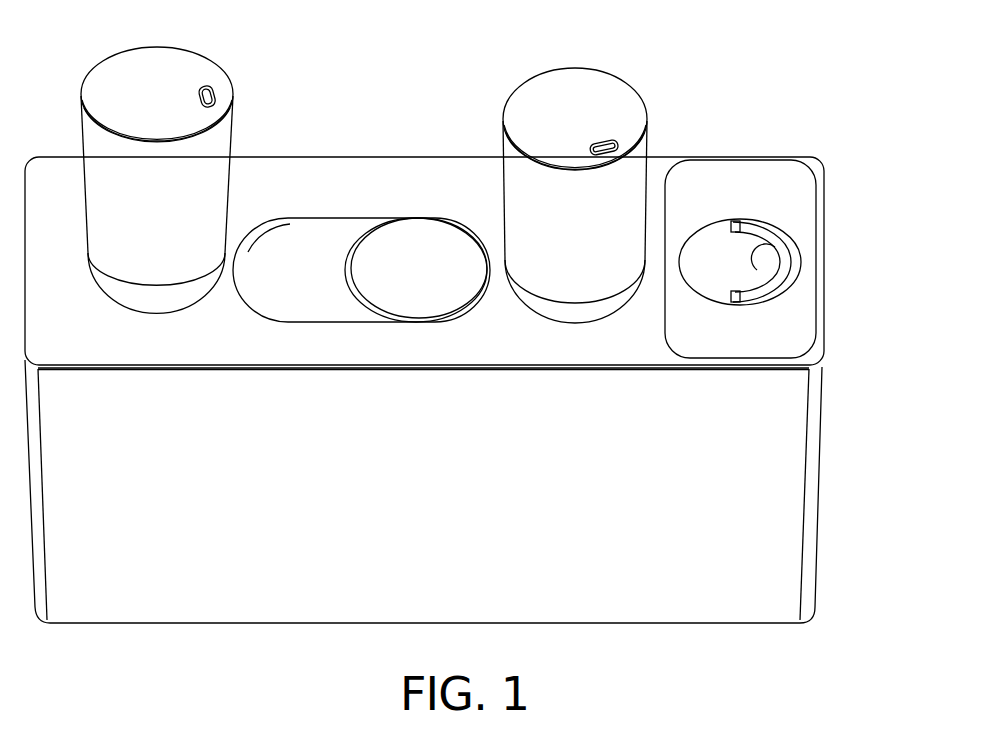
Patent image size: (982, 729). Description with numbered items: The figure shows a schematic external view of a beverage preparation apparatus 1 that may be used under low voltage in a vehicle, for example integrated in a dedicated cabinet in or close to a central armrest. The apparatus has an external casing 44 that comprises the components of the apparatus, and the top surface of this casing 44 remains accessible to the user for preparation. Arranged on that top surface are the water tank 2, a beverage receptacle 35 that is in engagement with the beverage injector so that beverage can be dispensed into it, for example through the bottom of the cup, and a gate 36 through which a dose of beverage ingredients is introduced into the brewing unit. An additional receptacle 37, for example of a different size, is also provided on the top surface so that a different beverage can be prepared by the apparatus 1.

The beverage preparation apparatus 1 is at (835, 214).
The water tank 2 is at (785, 172).
The beverage receptacle 35 is at (617, 96).
The gate 36 is at (416, 232).
The additional receptacle 37 is at (213, 86).
The external casing 44 is at (660, 606).